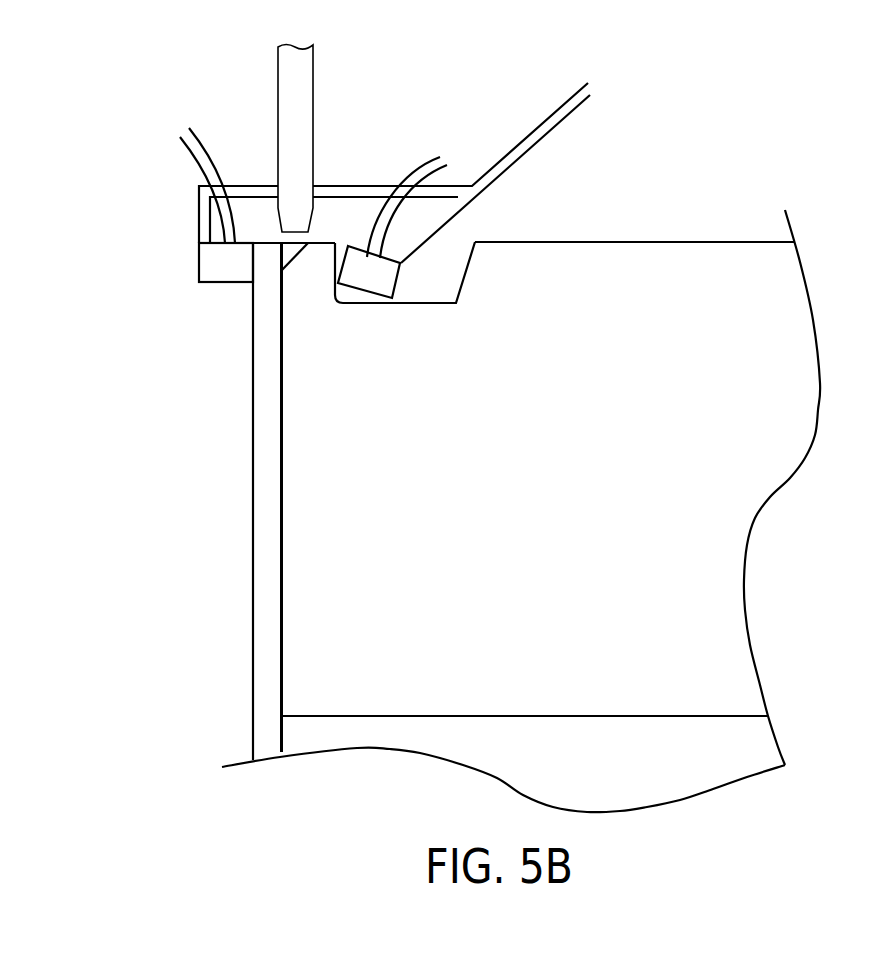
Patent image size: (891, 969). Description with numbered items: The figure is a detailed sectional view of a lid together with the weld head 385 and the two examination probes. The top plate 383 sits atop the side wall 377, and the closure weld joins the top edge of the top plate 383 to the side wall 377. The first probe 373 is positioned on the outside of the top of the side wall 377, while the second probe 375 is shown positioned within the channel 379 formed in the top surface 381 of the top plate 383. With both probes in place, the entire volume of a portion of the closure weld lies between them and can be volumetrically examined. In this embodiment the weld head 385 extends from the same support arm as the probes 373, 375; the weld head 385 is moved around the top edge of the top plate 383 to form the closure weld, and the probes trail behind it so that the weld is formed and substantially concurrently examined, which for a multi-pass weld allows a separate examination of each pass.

The first probe 373 is at (208, 268).
The second probe 375 is at (361, 263).
The side wall 377 is at (260, 387).
The channel 379 is at (448, 258).
The top surface 381 is at (612, 240).
The top plate 383 is at (692, 253).
The weld head 385 is at (297, 95).